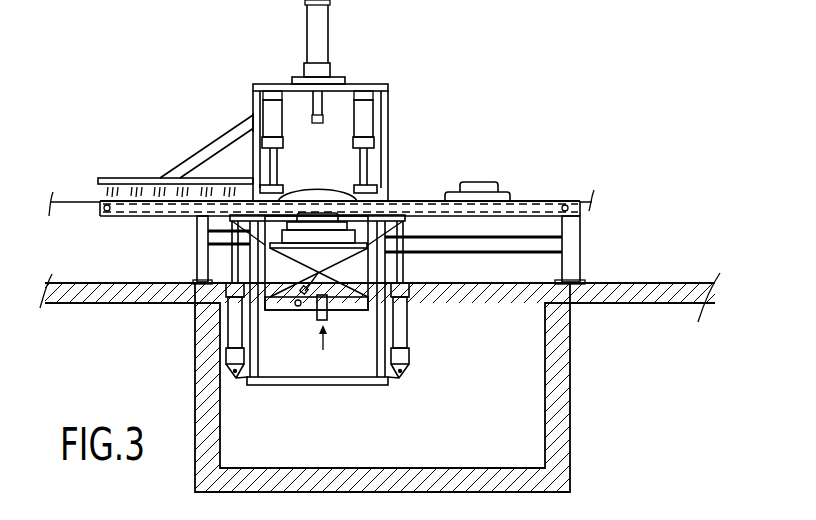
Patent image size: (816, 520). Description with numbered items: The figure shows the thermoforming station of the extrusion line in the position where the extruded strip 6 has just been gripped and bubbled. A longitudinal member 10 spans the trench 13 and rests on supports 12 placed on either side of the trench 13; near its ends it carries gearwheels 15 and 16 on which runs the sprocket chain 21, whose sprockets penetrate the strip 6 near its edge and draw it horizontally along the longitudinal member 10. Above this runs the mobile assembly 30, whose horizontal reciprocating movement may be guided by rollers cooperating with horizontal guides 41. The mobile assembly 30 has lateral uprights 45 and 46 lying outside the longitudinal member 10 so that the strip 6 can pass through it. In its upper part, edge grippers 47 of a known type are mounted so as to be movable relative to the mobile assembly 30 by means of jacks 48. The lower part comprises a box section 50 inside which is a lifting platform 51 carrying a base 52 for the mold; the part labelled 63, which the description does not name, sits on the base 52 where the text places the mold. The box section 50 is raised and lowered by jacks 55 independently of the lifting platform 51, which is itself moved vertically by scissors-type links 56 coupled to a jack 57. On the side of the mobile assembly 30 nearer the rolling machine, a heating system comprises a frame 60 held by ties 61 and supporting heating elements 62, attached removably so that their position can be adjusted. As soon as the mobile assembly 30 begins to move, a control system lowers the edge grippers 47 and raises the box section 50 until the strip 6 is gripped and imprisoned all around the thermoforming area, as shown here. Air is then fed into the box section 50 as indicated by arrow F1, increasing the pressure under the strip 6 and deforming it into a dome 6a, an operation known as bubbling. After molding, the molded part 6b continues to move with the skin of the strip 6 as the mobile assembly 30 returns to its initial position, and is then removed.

The strip 6 is at (68, 201).
The dome 6a is at (352, 190).
The molded part 6b is at (488, 181).
The longitudinal member 10 is at (410, 200).
The supports 12 is at (197, 256).
The trench 13 is at (526, 405).
The gearwheel 15 is at (103, 200).
The gearwheel 16 is at (567, 201).
The sprocket chain 21 is at (437, 212).
The mobile assembly 30 is at (396, 87).
The horizontal guides 41 is at (490, 254).
The lateral upright 45 is at (250, 137).
The lateral upright 46 is at (388, 115).
The edge grippers 47 is at (276, 196).
The jacks 48 is at (270, 105).
The box section 50 is at (388, 399).
The lifting platform 51 is at (358, 268).
The base 52 is at (355, 237).
The jacks 55 is at (237, 323).
The scissors-type links 56 is at (303, 292).
The jack 57 is at (320, 322).
The frame 60 is at (137, 178).
The ties 61 is at (200, 152).
The heating elements 62 is at (156, 204).
The pressure pad 63 is at (332, 221).
The arrow F1 is at (328, 345).